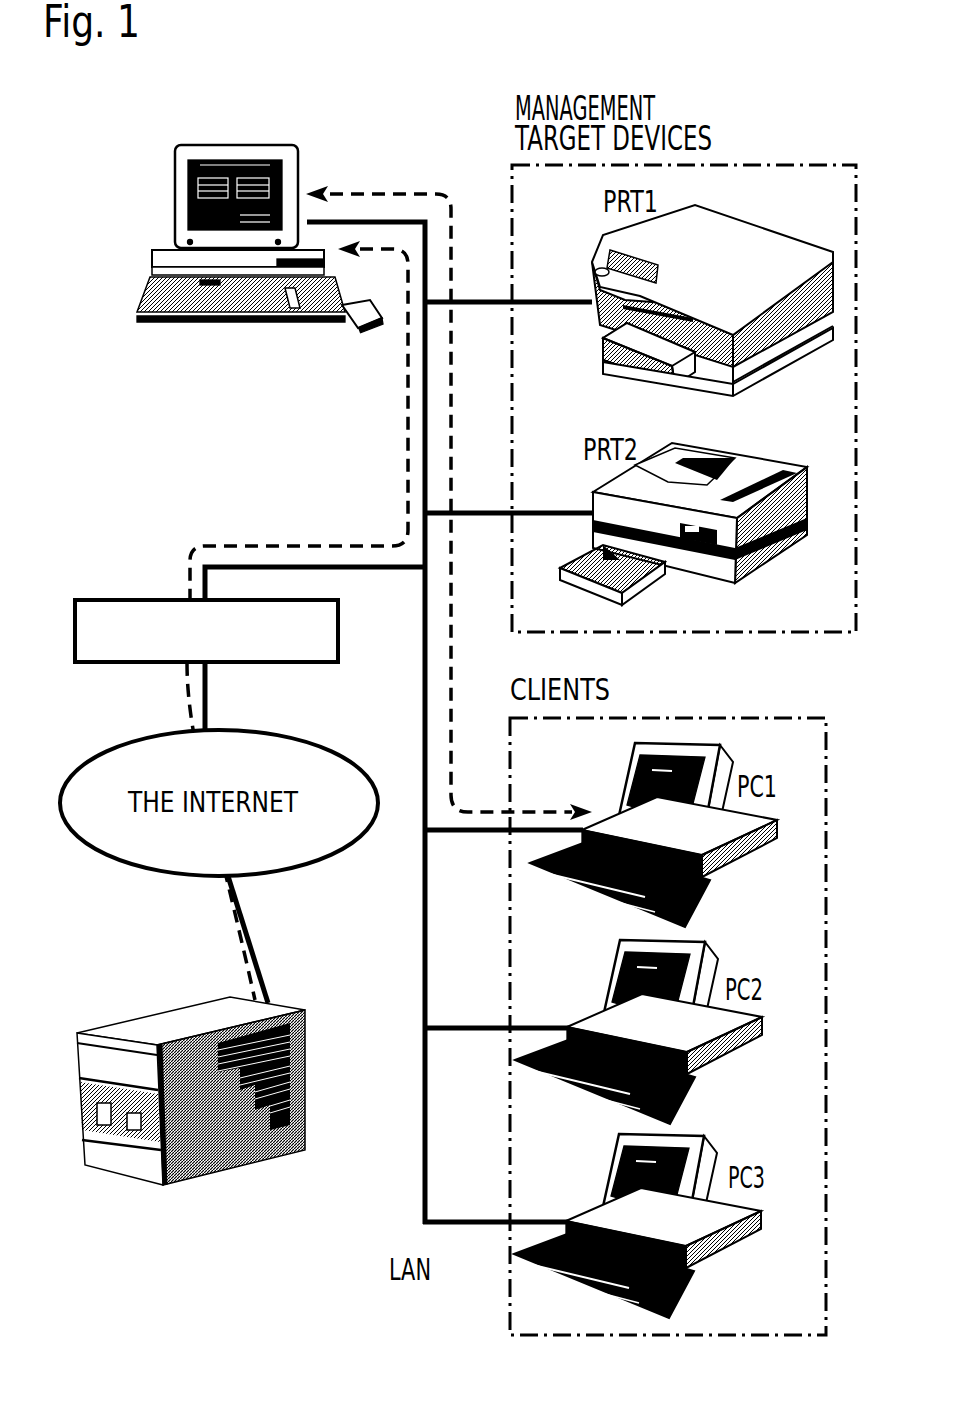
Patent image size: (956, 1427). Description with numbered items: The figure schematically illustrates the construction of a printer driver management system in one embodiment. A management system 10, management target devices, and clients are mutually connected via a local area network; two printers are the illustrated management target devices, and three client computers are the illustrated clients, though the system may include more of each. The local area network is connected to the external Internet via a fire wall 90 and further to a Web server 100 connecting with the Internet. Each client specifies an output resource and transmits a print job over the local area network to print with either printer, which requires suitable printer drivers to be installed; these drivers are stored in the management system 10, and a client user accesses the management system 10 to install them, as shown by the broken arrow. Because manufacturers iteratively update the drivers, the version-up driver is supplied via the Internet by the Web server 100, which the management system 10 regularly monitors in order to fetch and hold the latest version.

The management system 10 is at (175, 190).
The fire wall 90 is at (120, 598).
The Web server 100 is at (157, 1013).